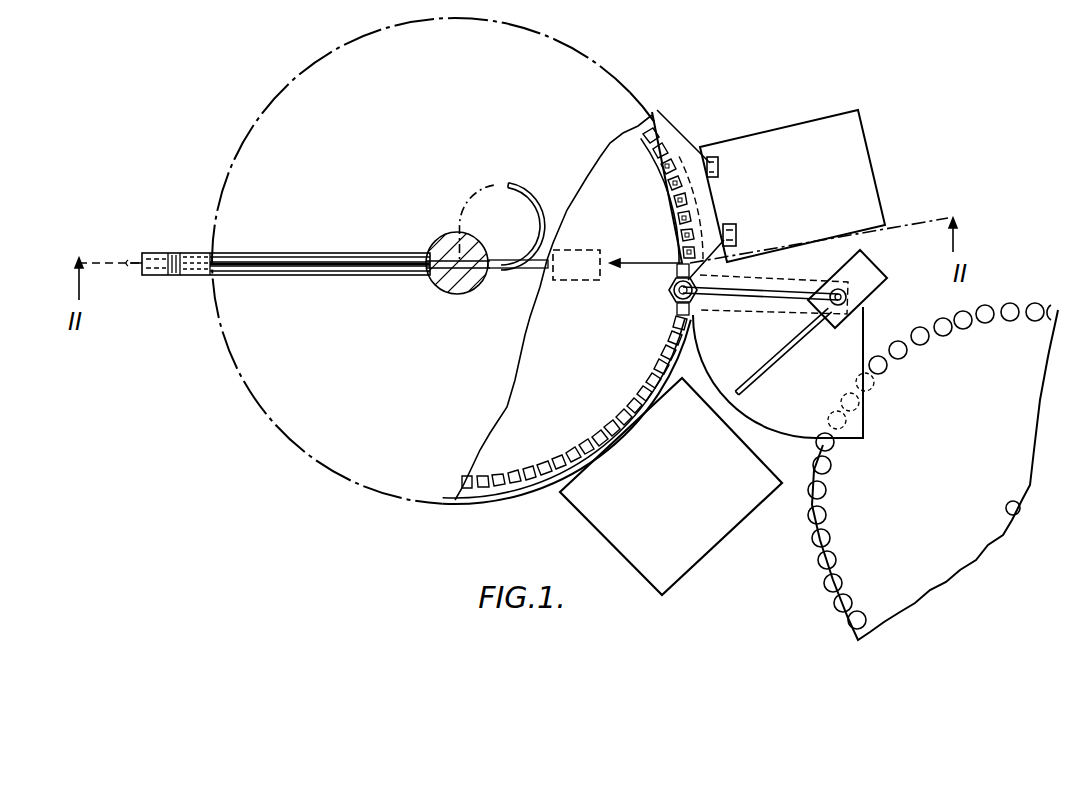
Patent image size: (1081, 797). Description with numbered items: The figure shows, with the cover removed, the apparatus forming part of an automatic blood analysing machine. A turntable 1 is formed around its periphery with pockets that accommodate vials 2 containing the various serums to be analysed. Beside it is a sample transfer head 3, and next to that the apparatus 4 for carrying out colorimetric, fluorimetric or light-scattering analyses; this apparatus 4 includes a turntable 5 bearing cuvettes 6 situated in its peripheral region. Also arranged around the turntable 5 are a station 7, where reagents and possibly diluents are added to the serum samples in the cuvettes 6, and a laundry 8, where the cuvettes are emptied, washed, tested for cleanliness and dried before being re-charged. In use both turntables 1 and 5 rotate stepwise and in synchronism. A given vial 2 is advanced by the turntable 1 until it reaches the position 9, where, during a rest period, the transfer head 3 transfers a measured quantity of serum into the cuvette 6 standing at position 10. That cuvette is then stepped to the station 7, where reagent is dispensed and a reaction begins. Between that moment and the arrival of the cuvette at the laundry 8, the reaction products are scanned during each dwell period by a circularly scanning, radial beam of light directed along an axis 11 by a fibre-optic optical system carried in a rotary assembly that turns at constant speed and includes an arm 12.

The turntable 1 is at (962, 533).
The vials 2 is at (832, 600).
The sample transfer head 3 is at (739, 298).
The apparatus for carrying out analyses 4 is at (250, 326).
The turntable 5 is at (525, 345).
The cuvettes 6 is at (498, 496).
The station 7 is at (720, 545).
The laundry 8 is at (842, 143).
The position 9 is at (836, 448).
The position 10 is at (670, 293).
The axis 11 is at (327, 267).
The arm 12 is at (287, 253).